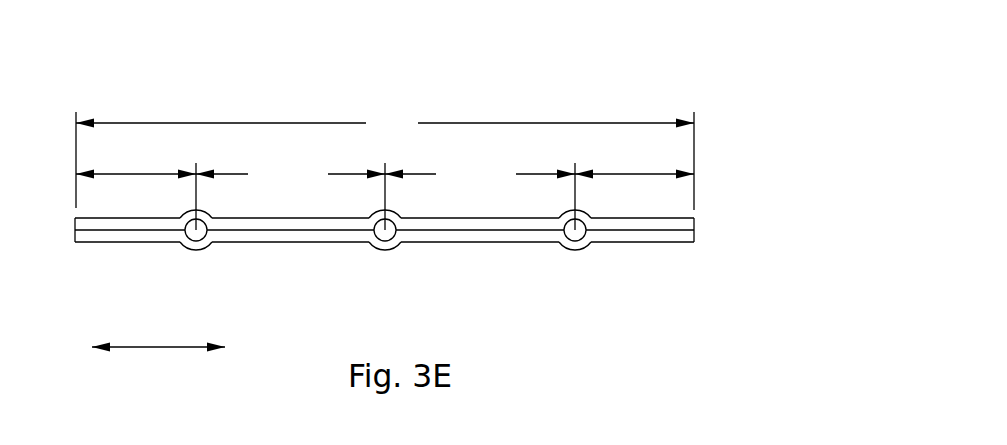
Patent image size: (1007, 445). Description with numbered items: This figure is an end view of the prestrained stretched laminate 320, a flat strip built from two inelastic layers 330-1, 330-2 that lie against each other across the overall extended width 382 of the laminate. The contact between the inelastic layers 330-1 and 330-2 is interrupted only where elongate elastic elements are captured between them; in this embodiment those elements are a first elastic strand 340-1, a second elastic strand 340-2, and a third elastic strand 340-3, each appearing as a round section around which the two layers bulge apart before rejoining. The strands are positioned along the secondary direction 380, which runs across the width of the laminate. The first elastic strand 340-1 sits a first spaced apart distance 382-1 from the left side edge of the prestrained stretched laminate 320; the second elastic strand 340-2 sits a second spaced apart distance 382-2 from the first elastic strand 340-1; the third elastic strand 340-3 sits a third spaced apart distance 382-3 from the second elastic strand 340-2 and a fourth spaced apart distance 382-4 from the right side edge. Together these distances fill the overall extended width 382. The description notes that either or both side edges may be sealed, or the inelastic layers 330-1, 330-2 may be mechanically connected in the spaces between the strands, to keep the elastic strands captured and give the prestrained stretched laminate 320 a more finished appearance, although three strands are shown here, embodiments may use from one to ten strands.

The prestrained stretched laminate 320 is at (413, 163).
The inelastic layer 330-1 is at (690, 237).
The inelastic layer 330-2 is at (690, 224).
The first elastic strand 340-1 is at (203, 237).
The second elastic strand 340-2 is at (392, 236).
The third elastic strand 340-3 is at (583, 237).
The secondary direction 380 is at (158, 332).
The overall extended width 382 is at (385, 124).
The first spaced apart distance 382-1 is at (136, 162).
The second spaced apart distance 382-2 is at (290, 175).
The third spaced apart distance 382-3 is at (480, 175).
The fourth spaced apart distance 382-4 is at (634, 163).